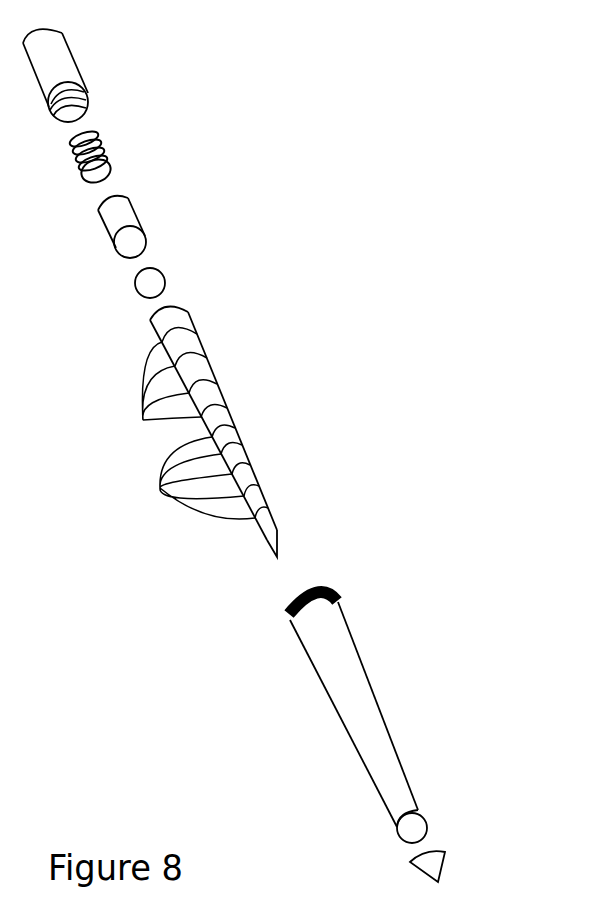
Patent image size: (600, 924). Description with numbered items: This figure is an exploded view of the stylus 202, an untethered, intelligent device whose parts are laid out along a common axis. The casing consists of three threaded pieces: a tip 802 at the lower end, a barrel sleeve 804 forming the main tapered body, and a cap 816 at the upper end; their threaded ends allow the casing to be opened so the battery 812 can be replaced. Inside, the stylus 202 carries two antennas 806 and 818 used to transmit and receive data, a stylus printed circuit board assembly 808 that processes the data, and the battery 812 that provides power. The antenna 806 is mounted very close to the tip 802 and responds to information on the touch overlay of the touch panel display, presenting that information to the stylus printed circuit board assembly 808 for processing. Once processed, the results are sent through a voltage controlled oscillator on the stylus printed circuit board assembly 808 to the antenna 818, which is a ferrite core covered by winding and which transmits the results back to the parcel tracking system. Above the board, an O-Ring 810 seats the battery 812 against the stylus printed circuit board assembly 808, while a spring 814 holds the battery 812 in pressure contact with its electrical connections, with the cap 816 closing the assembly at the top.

The stylus 202 is at (390, 290).
The tip 802 is at (440, 875).
The barrel sleeve 804 is at (410, 785).
The antenna 806 is at (276, 547).
The stylus printed circuit board assembly 808 is at (253, 487).
The O-Ring 810 is at (167, 285).
The battery 812 is at (142, 230).
The spring 814 is at (110, 167).
The cap 816 is at (82, 82).
The antenna 818 is at (160, 487).